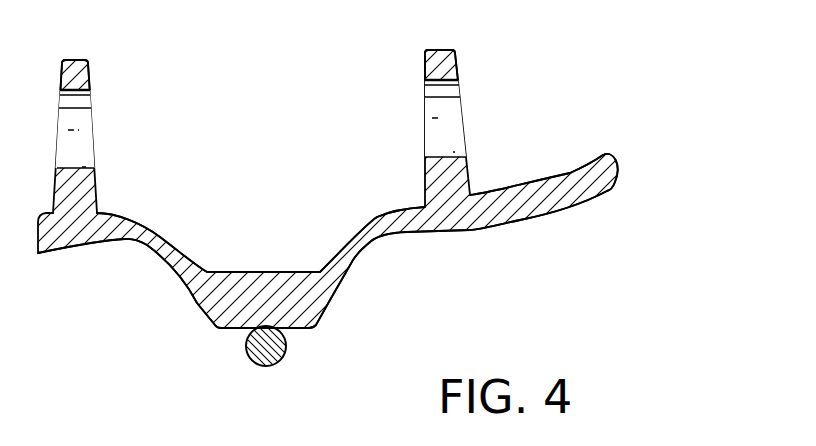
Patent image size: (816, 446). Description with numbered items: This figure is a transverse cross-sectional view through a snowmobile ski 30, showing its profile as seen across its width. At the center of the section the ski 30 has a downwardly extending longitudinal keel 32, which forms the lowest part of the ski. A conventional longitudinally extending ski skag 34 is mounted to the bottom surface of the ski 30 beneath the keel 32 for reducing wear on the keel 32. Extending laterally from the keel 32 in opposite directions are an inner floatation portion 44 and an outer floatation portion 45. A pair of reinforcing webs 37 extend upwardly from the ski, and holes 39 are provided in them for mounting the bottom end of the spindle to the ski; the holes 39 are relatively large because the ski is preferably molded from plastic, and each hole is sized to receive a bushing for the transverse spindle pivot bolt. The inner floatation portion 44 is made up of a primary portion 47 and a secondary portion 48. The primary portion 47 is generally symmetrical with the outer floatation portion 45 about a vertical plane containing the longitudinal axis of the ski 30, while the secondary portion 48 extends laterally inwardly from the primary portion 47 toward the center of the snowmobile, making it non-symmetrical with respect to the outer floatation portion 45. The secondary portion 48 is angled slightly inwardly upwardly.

The ski 30 is at (574, 236).
The keel 32 is at (330, 298).
The ski skag 34 is at (256, 366).
The reinforcing webs 37 is at (92, 72).
The holes 39 is at (85, 137).
The inner floatation portion 44 is at (542, 221).
The outer floatation portion 45 is at (126, 242).
The primary portion 47 is at (405, 233).
The secondary portion 48 is at (607, 193).